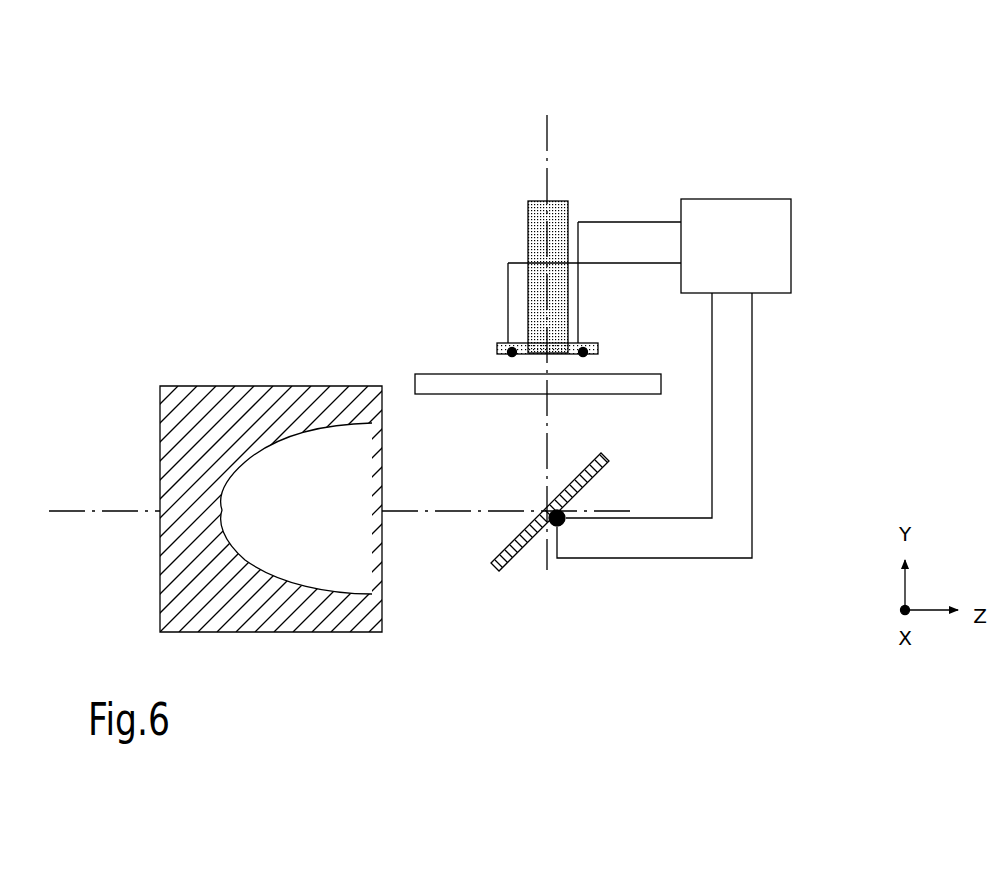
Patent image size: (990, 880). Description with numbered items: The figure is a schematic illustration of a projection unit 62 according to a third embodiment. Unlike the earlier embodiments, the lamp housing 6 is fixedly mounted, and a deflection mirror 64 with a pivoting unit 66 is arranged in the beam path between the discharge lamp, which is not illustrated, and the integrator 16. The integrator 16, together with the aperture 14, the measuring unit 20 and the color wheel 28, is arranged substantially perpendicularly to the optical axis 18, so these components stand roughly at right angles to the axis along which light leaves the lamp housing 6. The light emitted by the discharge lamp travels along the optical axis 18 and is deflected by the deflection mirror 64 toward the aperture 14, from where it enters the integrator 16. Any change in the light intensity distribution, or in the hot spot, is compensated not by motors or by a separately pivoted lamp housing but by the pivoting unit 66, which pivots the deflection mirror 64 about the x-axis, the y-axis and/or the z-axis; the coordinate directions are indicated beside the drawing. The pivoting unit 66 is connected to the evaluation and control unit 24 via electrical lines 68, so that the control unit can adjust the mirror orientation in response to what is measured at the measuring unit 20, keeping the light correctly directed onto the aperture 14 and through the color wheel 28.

The lamp housing 6 is at (258, 402).
The aperture 14 is at (559, 363).
The integrator 16 is at (528, 226).
The optical axis 18 is at (62, 513).
The measuring unit 20 is at (598, 345).
The evaluation and control unit 24 is at (649, 271).
The color wheel 28 is at (441, 383).
The projection unit 62 is at (689, 110).
The deflection mirror 64 is at (496, 571).
The pivoting unit 66 is at (566, 527).
The electrical lines 68 is at (712, 365).